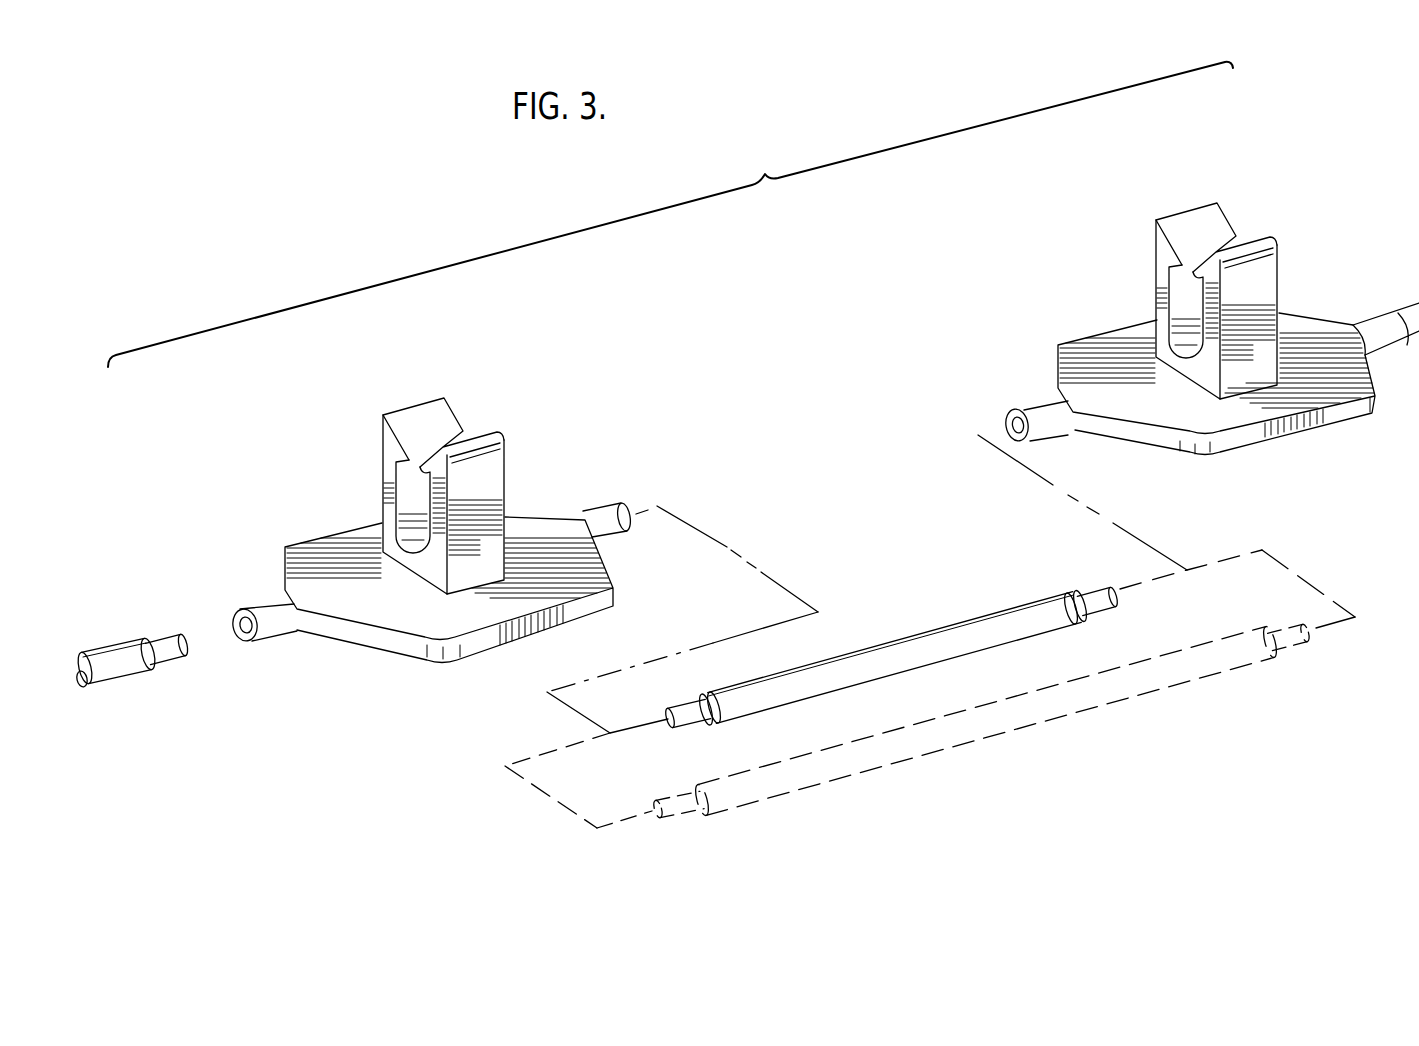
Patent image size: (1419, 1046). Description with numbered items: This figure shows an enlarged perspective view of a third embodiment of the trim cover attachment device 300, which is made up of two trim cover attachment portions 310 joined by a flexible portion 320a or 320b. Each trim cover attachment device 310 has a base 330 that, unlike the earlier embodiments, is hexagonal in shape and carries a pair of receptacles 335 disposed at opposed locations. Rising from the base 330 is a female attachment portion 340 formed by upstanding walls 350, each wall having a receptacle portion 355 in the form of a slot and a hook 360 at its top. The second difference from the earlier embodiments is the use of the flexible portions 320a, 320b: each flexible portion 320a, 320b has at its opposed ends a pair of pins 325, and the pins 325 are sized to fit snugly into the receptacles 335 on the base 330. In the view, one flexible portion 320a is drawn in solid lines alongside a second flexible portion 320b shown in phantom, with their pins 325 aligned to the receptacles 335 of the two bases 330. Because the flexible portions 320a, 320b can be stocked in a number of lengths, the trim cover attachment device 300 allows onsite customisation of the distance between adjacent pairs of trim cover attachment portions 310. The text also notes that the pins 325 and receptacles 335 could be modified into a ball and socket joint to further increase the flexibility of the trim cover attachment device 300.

The trim cover attachment device 300 is at (670, 214).
The trim cover attachment device 310 is at (266, 516).
The flexible portion 320a is at (110, 683).
The flexible portion 320b is at (1068, 708).
The pin 325 is at (174, 636).
The base 330 is at (378, 609).
The receptacle 335 is at (633, 503).
The female attachment portion 340 is at (452, 374).
The upstanding wall 350 is at (386, 474).
The receptacle portion 355 is at (405, 513).
The hook 360 is at (392, 443).